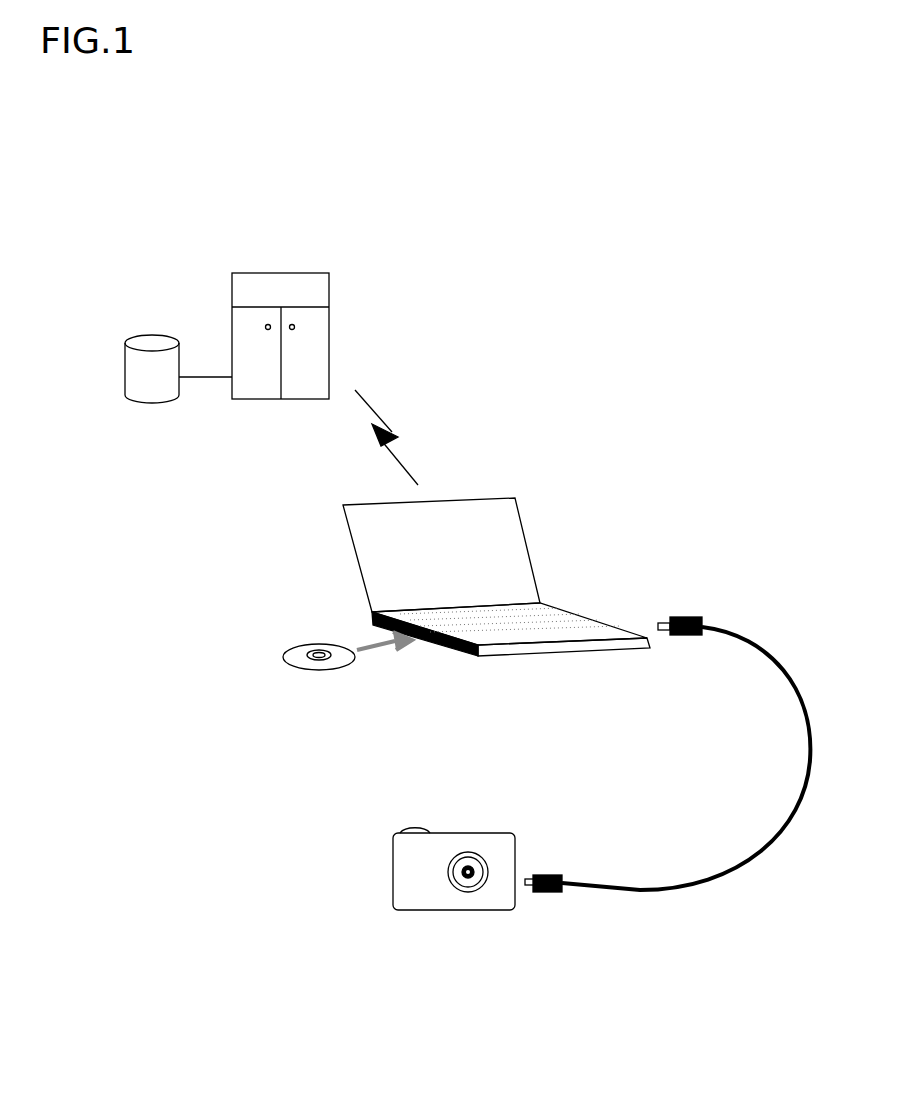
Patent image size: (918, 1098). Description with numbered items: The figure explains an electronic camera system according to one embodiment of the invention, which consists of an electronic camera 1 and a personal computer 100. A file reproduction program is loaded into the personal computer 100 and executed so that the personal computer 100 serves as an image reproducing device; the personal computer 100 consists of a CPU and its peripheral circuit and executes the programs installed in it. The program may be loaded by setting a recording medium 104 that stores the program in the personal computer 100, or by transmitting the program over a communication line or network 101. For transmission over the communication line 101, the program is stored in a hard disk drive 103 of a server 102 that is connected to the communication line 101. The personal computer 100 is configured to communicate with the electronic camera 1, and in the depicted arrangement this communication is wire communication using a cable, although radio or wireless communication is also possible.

The electronic camera 1 is at (438, 915).
The personal computer 100 is at (495, 497).
The communication line or network 101 is at (405, 440).
The server 102 is at (300, 272).
The hard disk drive 103 is at (168, 315).
The recording medium 104 is at (305, 670).